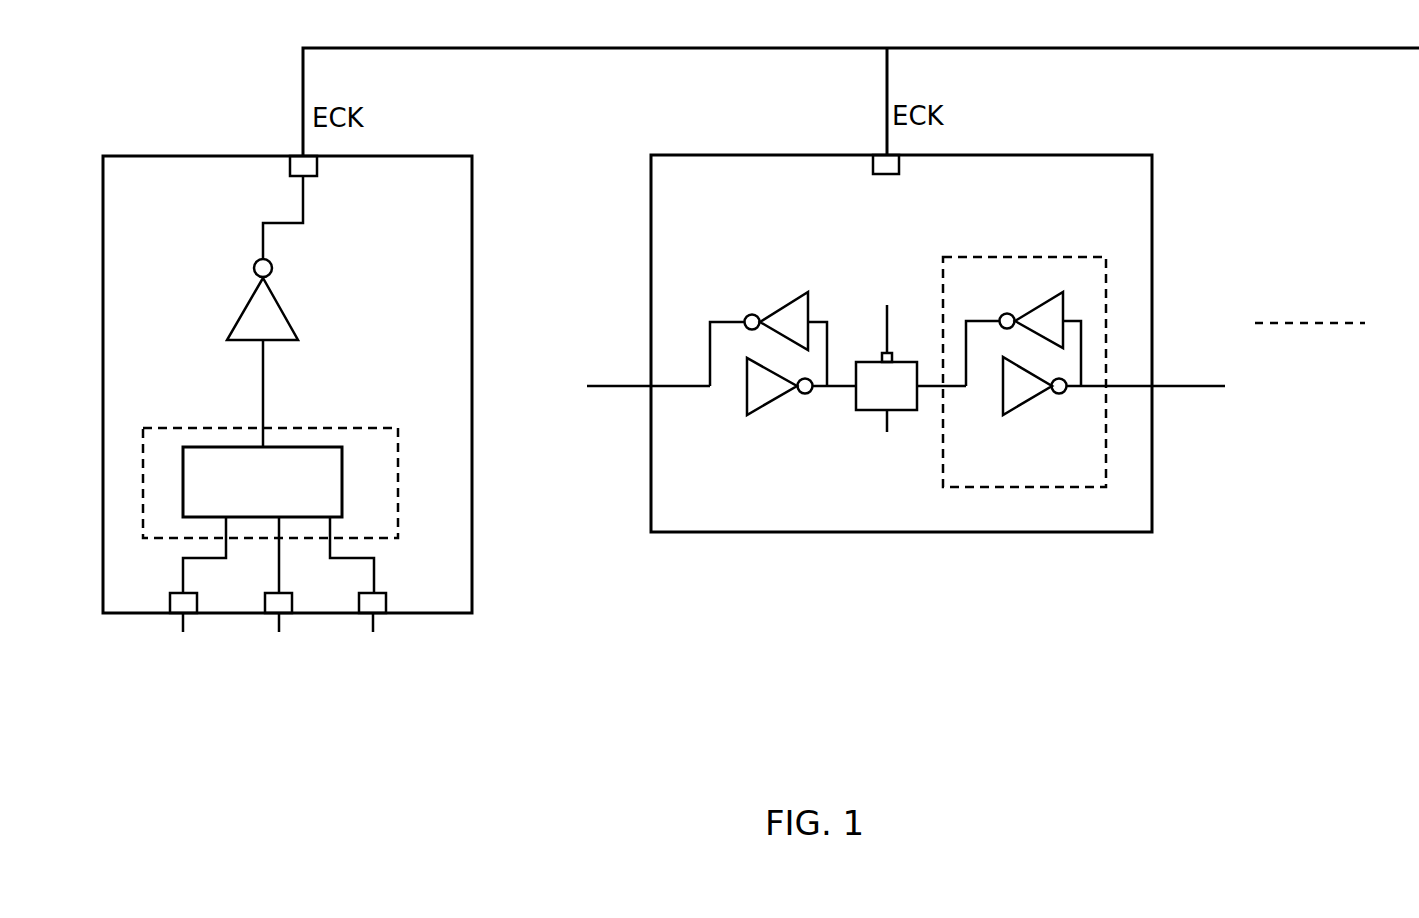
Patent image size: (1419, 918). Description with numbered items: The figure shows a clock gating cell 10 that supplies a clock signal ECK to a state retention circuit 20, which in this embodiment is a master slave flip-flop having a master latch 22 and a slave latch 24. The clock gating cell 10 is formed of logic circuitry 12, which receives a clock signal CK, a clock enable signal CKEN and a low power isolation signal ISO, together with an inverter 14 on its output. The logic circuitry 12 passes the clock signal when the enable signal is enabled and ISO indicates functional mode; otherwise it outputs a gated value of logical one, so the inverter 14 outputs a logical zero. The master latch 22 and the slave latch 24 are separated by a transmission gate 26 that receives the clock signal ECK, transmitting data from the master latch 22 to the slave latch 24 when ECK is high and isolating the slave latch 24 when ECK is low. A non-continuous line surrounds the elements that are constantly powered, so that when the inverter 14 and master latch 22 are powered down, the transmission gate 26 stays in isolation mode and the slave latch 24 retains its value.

The clock gating cell 10 is at (450, 153).
The logic circuitry 12 is at (323, 446).
The inverter 14 is at (287, 311).
The state retention circuit 20 is at (1138, 149).
The master latch 22 is at (763, 293).
The slave latch 24 is at (1016, 256).
The transmission gate 26 is at (890, 264).